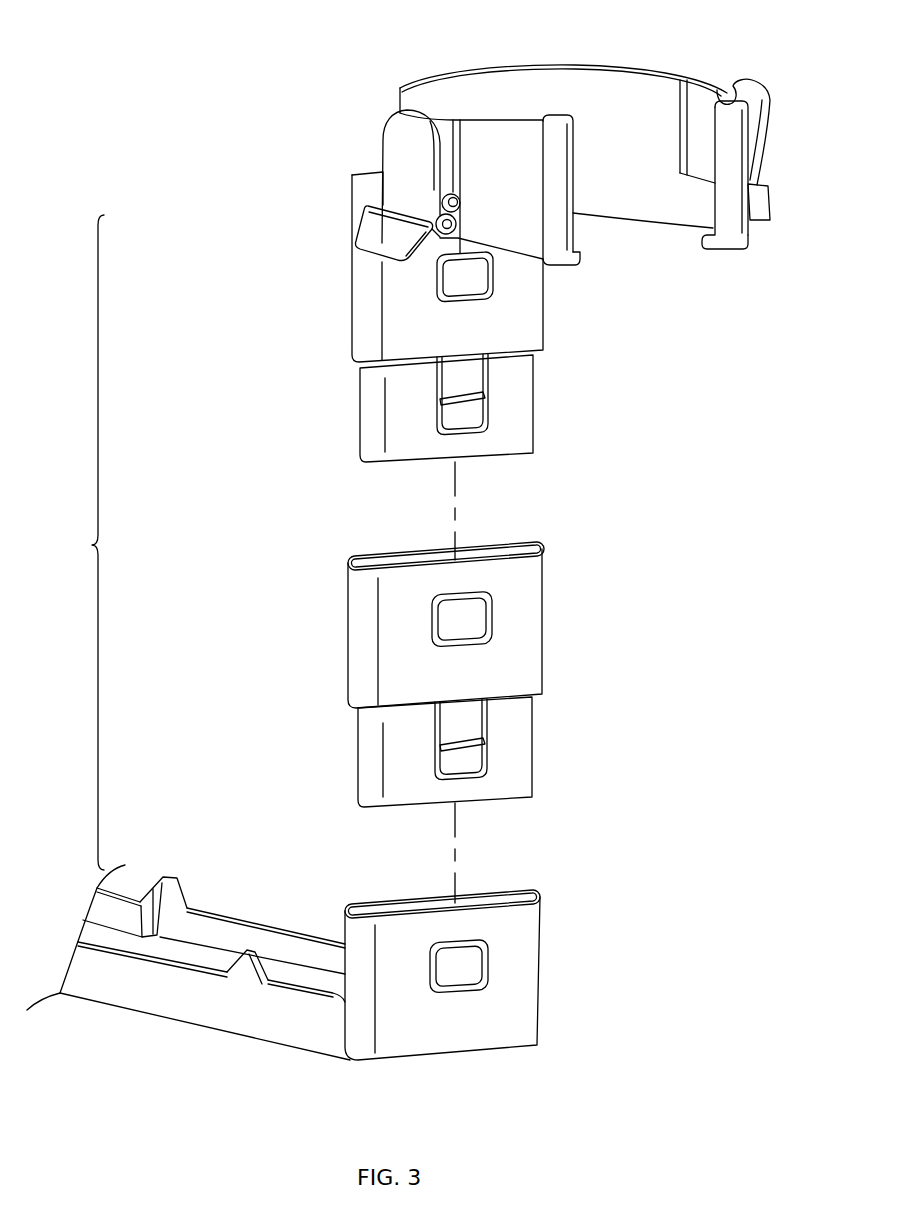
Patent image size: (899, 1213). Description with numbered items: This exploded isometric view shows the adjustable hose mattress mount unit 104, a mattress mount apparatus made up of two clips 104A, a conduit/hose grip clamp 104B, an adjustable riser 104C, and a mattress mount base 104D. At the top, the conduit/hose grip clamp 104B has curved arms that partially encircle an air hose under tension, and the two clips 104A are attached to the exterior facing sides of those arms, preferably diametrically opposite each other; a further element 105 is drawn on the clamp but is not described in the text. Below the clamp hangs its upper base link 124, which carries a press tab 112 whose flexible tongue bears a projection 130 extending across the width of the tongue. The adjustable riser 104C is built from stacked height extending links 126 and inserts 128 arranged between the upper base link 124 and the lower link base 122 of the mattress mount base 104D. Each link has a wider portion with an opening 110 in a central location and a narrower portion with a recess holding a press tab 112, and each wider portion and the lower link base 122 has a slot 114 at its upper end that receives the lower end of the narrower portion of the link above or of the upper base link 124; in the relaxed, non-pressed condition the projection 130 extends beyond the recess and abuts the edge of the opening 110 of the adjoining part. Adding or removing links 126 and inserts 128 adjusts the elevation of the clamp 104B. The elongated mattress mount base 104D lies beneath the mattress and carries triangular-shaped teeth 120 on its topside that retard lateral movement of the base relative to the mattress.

The adjustable hose mattress mount unit 104 is at (706, 1006).
The clip 104A is at (394, 143).
The conduit/hose grip clamp 104B is at (583, 66).
The adjustable riser 104C is at (66, 542).
The mattress mount base 104D is at (180, 1006).
The strip 105 is at (726, 214).
The opening 110 is at (467, 279).
The press tab 112 is at (465, 379).
The slot 114 is at (514, 549).
The triangular-shaped teeth 120 is at (253, 948).
The lower link base 122 is at (518, 1007).
The upper base link 124 is at (358, 198).
The height extending link 126 is at (357, 305).
The insert 128 is at (371, 426).
The projection 130 is at (477, 401).